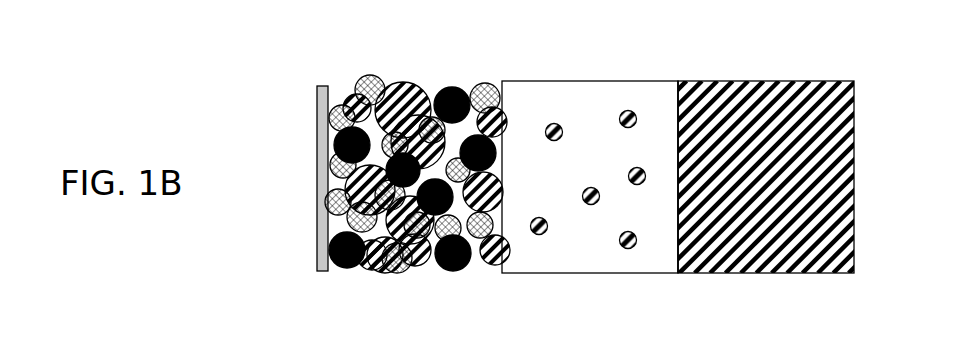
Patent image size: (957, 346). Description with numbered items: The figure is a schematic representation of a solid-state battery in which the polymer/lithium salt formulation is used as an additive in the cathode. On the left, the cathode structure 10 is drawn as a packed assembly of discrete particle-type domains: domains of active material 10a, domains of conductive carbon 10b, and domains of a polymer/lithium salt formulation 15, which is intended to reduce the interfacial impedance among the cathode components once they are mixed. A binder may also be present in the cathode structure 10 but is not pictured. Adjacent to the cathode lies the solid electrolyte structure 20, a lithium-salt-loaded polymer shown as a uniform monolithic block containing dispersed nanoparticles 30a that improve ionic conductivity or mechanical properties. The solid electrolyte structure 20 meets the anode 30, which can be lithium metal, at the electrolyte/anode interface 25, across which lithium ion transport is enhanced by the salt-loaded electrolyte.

The cathode structure 10 is at (382, 62).
The domains of active material 10a is at (415, 100).
The domains of conductive carbon 10b is at (333, 145).
The domains of polymer/lithium salt formulation 15 is at (332, 203).
The solid electrolyte structure 20 is at (563, 65).
The electrolyte/anode interface 25 is at (675, 243).
The anode 30 is at (735, 63).
The nanoparticles 30a is at (628, 117).